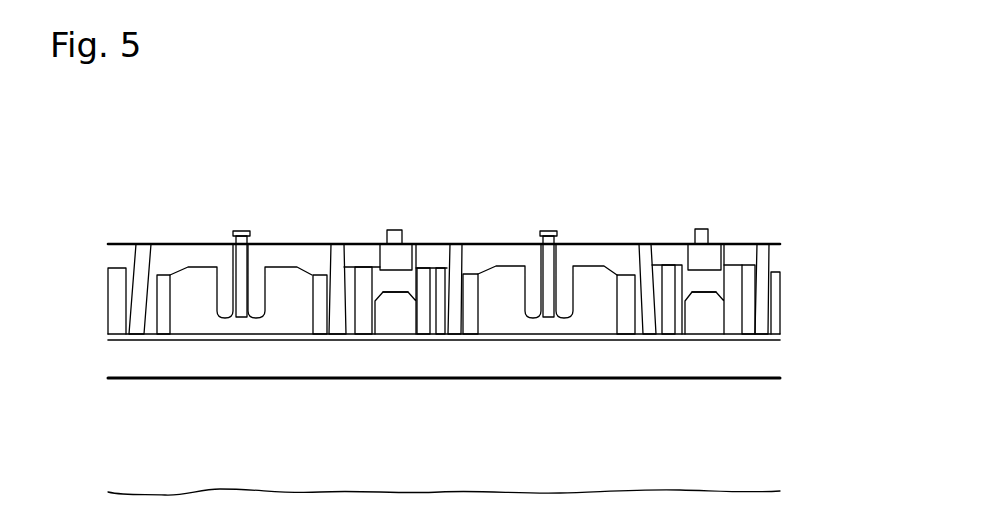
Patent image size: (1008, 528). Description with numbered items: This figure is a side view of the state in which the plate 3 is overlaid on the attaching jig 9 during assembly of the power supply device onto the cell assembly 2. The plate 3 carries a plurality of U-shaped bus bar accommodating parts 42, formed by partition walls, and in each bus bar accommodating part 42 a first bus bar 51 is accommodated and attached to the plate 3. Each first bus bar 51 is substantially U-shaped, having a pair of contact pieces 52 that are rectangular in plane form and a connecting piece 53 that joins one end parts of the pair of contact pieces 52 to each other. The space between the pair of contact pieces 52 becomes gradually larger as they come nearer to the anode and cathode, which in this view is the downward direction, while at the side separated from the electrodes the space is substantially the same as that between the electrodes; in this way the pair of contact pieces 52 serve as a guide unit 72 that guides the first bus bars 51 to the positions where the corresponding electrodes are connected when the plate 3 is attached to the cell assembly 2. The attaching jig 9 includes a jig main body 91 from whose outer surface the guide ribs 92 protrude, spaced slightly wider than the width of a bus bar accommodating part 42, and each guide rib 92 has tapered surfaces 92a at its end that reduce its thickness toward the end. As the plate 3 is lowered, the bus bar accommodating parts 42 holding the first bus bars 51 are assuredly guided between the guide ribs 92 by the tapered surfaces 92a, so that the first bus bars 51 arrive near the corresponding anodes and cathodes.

The cell assembly 2 is at (784, 442).
The plate 3 is at (108, 240).
The attaching jig 9 is at (784, 356).
The bus bar accommodating part 42 is at (362, 262).
The first bus bar 51 is at (270, 244).
The contact piece 52 is at (143, 244).
The guide unit 72 is at (443, 239).
The connecting piece 53 is at (199, 244).
The jig main body 91 is at (745, 350).
The guide rib 92 is at (403, 321).
The tapered surface 92a is at (423, 267).